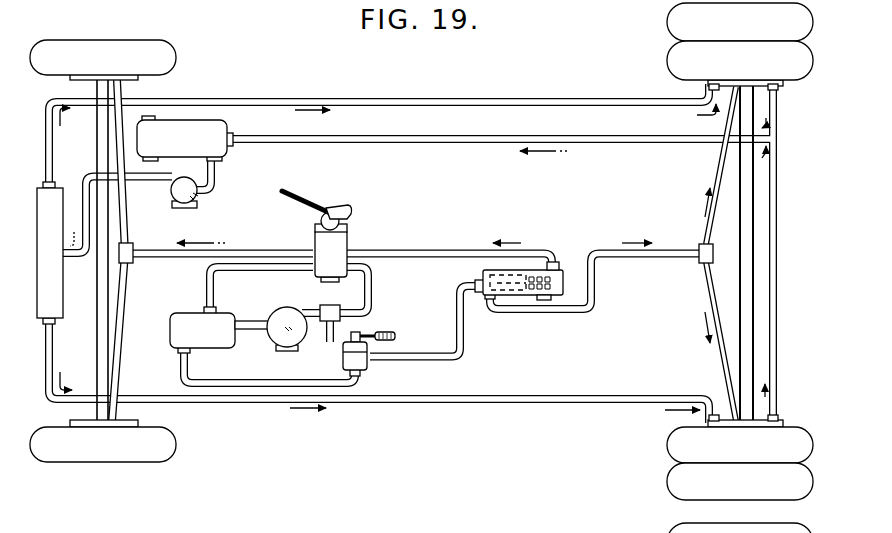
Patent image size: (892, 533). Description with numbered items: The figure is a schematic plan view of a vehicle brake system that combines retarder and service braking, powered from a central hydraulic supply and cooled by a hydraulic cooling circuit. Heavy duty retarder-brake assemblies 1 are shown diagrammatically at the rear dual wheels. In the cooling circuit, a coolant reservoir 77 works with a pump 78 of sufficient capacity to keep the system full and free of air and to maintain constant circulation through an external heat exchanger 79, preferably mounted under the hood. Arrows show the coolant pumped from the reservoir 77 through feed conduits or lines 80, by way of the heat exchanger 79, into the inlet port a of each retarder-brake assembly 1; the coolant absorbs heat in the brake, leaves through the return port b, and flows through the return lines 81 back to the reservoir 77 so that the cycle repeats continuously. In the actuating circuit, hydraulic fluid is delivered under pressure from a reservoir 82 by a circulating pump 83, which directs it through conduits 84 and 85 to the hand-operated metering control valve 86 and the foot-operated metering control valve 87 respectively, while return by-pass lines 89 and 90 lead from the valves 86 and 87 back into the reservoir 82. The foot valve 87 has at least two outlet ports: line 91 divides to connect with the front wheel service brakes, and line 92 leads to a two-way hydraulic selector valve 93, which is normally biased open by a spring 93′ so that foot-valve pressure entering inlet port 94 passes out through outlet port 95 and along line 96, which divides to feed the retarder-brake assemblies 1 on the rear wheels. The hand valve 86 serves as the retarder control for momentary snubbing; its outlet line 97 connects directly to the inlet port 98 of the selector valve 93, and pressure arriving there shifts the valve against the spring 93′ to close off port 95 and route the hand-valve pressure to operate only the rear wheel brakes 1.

The retarder-brake assembly 1 is at (786, 85).
The coolant inlet port a is at (705, 86).
The coolant return port b is at (771, 88).
The coolant reservoir 77 is at (226, 126).
The pump 78 is at (169, 193).
The heat exchanger 79 is at (39, 238).
The feed conduits 80 is at (397, 101).
The return lines 81 is at (417, 144).
The reservoir 82 is at (185, 312).
The circulating pump 83 is at (280, 308).
The conduit 84 is at (328, 342).
The conduit 85 is at (371, 281).
The hand-operated metering control valve 86 is at (360, 361).
The foot-operated metering control valve 87 is at (318, 254).
The return by-pass line 89 is at (232, 380).
The return by-pass line 90 is at (235, 271).
The line 91 is at (158, 250).
The line 92 is at (422, 250).
The two-way hydraulic selector valve 93 is at (500, 270).
The spring 93′ is at (564, 276).
The inlet port 94 is at (559, 262).
The outlet port 95 is at (556, 298).
The line 96 is at (582, 316).
The line 97 is at (422, 352).
The inlet port 98 is at (457, 292).